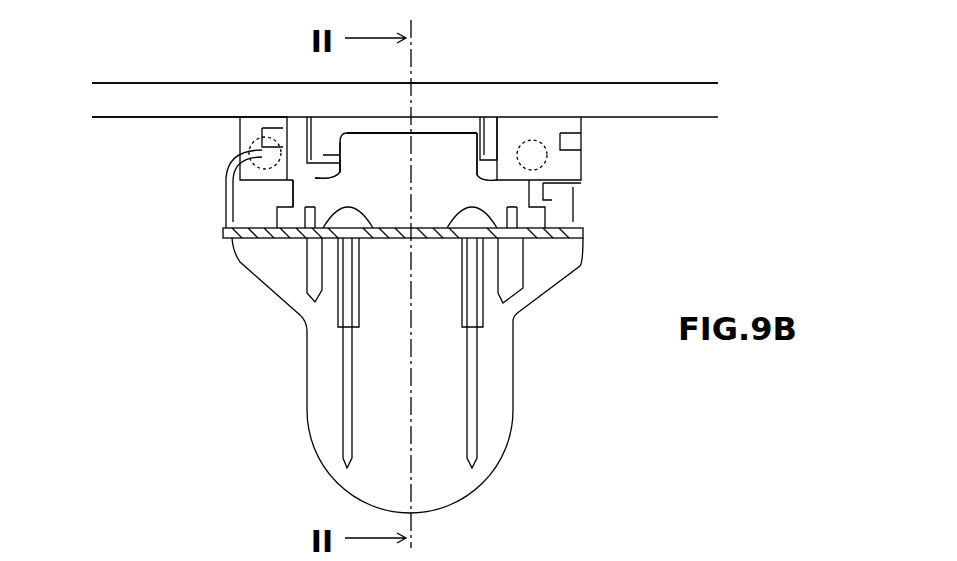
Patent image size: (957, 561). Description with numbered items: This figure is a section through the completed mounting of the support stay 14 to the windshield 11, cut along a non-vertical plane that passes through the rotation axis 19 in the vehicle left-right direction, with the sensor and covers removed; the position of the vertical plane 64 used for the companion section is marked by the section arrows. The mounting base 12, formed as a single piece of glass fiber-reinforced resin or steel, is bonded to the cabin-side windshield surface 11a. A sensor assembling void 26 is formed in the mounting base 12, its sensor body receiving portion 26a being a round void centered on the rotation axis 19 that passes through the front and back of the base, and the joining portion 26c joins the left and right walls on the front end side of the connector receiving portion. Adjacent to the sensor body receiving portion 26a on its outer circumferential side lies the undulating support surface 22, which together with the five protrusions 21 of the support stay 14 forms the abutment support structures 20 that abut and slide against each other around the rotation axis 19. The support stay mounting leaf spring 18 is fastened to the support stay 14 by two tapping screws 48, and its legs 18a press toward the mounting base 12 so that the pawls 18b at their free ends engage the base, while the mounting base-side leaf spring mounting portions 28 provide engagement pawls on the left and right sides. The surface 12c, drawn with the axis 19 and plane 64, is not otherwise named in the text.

The windshield 11 is at (151, 90).
The windshield surface 11a is at (125, 119).
The mounting base 12 is at (599, 143).
The housing surface 12c is at (405, 59).
The rotation axis 19 is at (405, 59).
The vertical plane 64 is at (422, 80).
The support stay 14 is at (507, 466).
The support stay mounting leaf spring 18 is at (303, 253).
The leg 18a is at (238, 200).
The pawl 18b is at (523, 116).
The abutment support structure 20 is at (315, 178).
The protrusion 21 is at (258, 229).
The support surface 22 is at (291, 177).
The sensor assembling void 26 is at (502, 269).
The sensor body receiving portion 26a is at (433, 176).
The joining portion 26c is at (358, 128).
The mounting base-side leaf spring mounting portion 28 is at (257, 155).
The tapping screw 48 is at (337, 292).